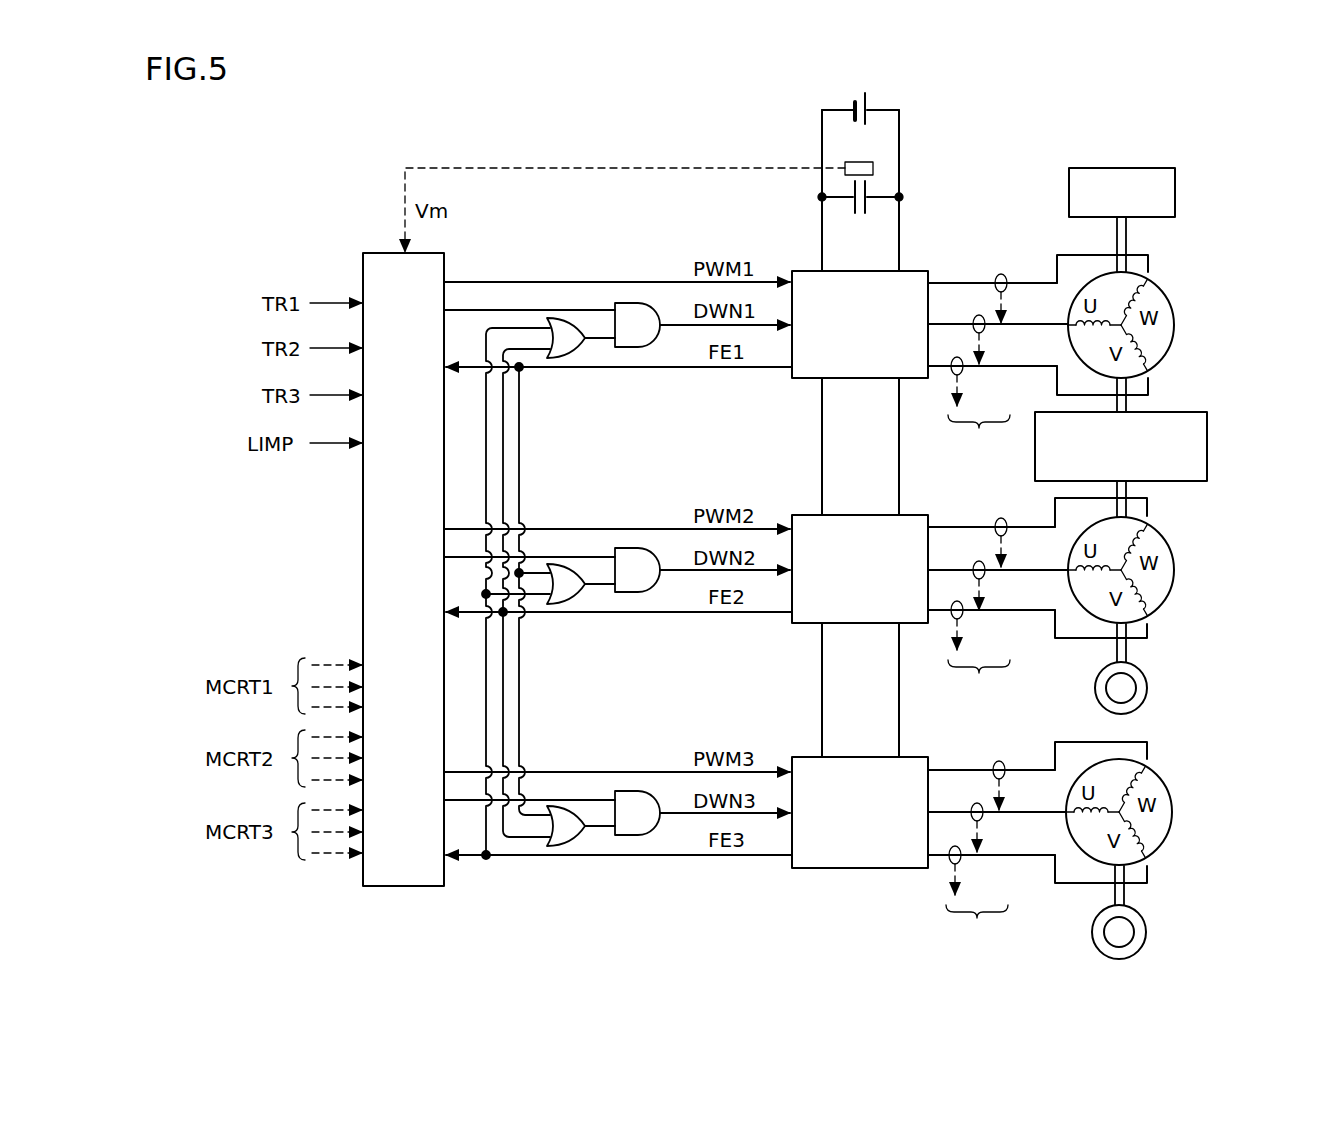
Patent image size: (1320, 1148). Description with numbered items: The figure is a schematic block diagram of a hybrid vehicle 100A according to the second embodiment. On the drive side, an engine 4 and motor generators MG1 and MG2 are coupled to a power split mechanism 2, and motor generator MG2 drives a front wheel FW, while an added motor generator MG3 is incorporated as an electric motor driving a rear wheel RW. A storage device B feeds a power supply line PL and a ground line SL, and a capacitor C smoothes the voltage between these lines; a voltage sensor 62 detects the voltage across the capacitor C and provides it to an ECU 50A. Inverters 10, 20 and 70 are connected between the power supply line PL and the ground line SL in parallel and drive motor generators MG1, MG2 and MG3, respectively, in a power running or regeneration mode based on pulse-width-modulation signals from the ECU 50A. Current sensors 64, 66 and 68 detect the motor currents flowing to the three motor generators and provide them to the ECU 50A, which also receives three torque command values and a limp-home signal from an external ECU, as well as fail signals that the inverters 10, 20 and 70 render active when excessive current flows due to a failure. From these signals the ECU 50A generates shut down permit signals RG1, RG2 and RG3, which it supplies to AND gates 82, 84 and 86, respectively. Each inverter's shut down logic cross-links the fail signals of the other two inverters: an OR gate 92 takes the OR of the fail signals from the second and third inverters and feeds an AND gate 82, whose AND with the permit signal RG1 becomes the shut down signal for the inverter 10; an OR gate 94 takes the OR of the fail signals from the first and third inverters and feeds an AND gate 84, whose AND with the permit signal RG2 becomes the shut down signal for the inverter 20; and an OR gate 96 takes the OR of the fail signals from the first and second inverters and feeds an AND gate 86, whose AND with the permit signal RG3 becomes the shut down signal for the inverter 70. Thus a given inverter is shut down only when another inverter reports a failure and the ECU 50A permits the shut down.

The hybrid vehicle 100A is at (418, 101).
The ECU 50A is at (376, 252).
The voltage sensor 62 is at (848, 160).
The storage device B is at (867, 100).
The capacitor C is at (867, 209).
The power supply line PL is at (900, 153).
The ground line SL is at (822, 221).
The inverter 10 is at (803, 380).
The inverter 20 is at (803, 624).
The inverter 70 is at (803, 869).
The AND gate 82 is at (637, 301).
The AND gate 84 is at (637, 546).
The AND gate 86 is at (637, 789).
The OR gate 92 is at (576, 373).
The OR gate 94 is at (576, 620).
The OR gate 96 is at (576, 862).
The shut down permit signal RG1 is at (521, 307).
The shut down permit signal RG2 is at (571, 552).
The shut down permit signal RG3 is at (571, 795).
The current sensor 64 is at (957, 356).
The current sensor 66 is at (957, 600).
The current sensor 68 is at (955, 845).
The engine 4 is at (1153, 168).
The power split mechanism 2 is at (1174, 412).
The motor generator MG1 is at (1175, 311).
The motor generator MG2 is at (1176, 556).
The motor generator MG3 is at (1173, 798).
The wheel FW is at (1144, 680).
The wheel RW is at (1142, 920).